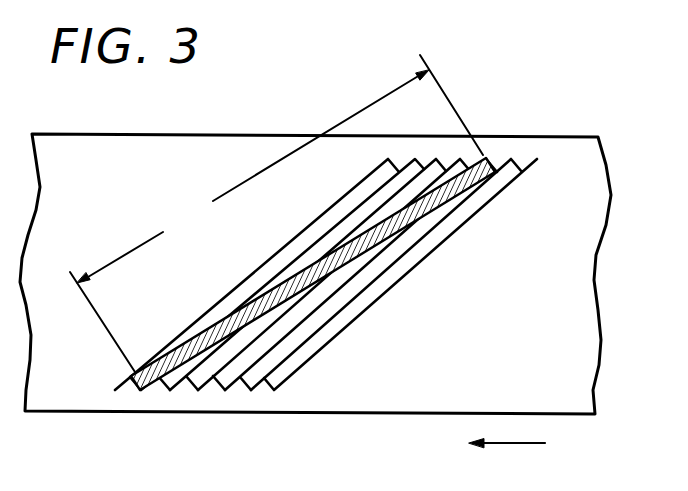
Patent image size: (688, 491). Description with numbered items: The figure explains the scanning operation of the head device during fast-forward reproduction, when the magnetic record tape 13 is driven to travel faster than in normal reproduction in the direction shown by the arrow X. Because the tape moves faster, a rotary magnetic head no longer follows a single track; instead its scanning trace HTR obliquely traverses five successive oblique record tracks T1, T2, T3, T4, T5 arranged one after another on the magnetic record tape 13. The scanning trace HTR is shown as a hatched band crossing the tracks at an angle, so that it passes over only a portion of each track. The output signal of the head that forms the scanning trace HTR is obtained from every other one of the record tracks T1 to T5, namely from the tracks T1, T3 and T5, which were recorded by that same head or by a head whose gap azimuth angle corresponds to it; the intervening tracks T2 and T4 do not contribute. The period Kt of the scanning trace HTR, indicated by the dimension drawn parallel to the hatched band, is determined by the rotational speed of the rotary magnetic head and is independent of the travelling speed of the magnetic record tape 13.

The magnetic record tape 13 is at (146, 134).
The record track T1 is at (178, 334).
The record track T2 is at (170, 390).
The record track T3 is at (198, 390).
The record track T4 is at (225, 390).
The record track T5 is at (251, 390).
The scanning trace HTR is at (420, 224).
The period of the scanning trace Kt is at (276, 213).
The direction of tape travel X is at (507, 458).